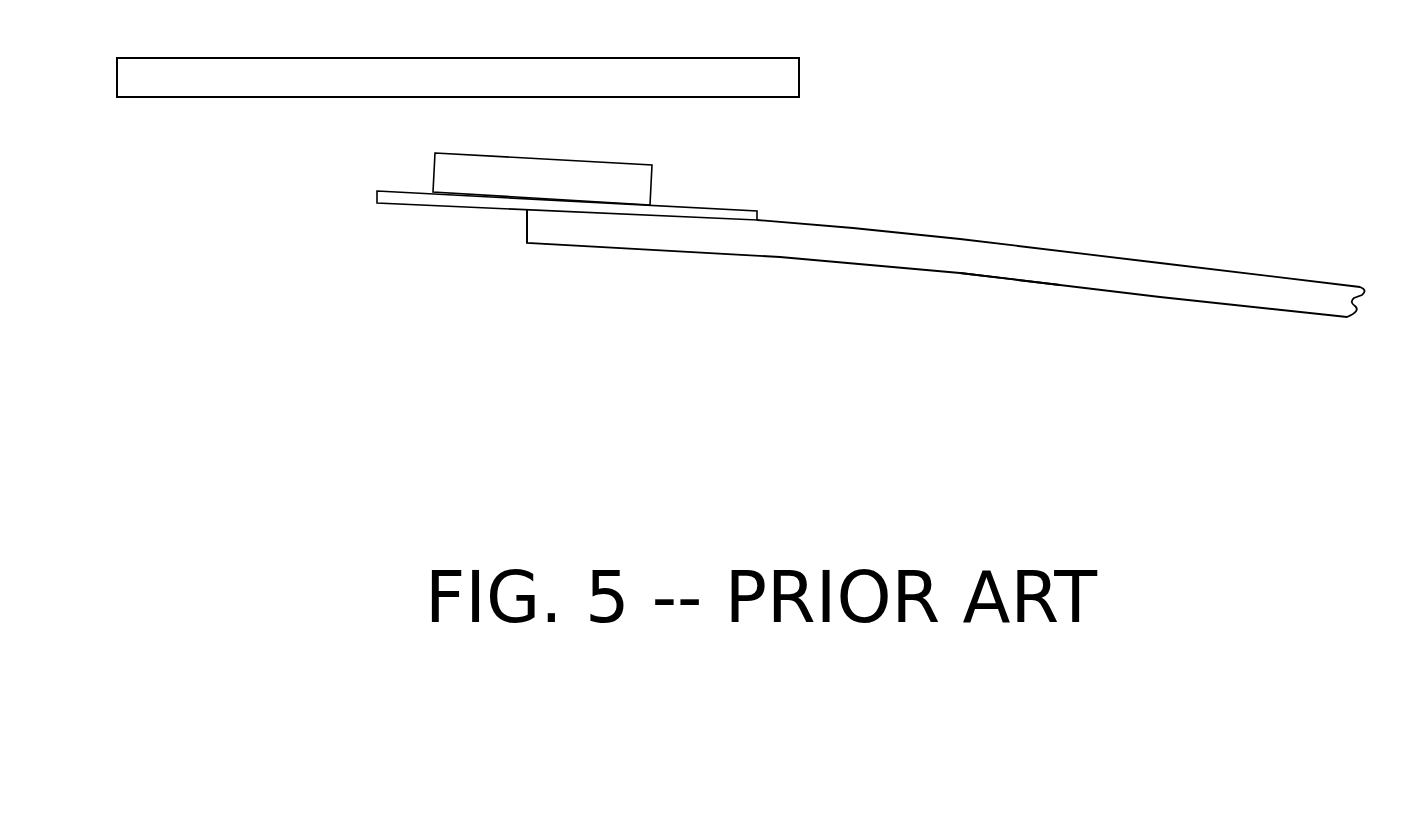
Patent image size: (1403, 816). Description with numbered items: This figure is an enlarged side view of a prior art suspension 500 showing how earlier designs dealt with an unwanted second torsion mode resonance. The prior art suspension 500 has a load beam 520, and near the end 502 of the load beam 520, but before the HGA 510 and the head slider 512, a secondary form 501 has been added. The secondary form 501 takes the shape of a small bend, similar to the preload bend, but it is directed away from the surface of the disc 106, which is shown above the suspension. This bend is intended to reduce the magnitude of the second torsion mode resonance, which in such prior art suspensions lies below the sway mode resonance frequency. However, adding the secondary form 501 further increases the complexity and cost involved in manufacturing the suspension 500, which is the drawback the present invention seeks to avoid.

The disc 106 is at (458, 148).
The suspension 500 is at (992, 173).
The secondary form 501 is at (946, 298).
The end of load beam 502 is at (449, 305).
The HGA 510 is at (564, 260).
The head slider 512 is at (635, 165).
The load beam 520 is at (1040, 343).